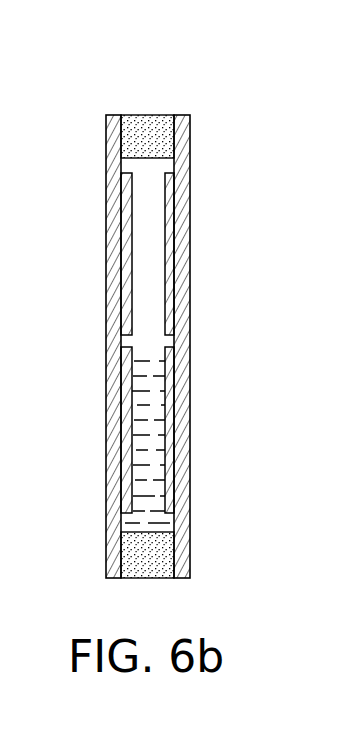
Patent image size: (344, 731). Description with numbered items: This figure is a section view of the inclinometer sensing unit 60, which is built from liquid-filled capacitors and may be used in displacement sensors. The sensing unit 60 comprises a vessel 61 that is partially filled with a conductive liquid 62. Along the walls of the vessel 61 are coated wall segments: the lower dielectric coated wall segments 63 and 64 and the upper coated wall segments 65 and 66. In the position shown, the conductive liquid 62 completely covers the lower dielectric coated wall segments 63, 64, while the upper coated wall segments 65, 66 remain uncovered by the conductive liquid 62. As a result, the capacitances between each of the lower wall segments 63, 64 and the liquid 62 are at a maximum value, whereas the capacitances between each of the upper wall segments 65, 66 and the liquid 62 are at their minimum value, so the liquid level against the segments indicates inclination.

The inclinometer sensing unit 60 is at (190, 93).
The vessel 61 is at (153, 261).
The conductive liquid 62 is at (150, 430).
The dielectric coated wall segment 63 is at (171, 478).
The dielectric coated wall segment 64 is at (128, 466).
The coated wall segment 65 is at (170, 308).
The coated wall segment 66 is at (127, 244).